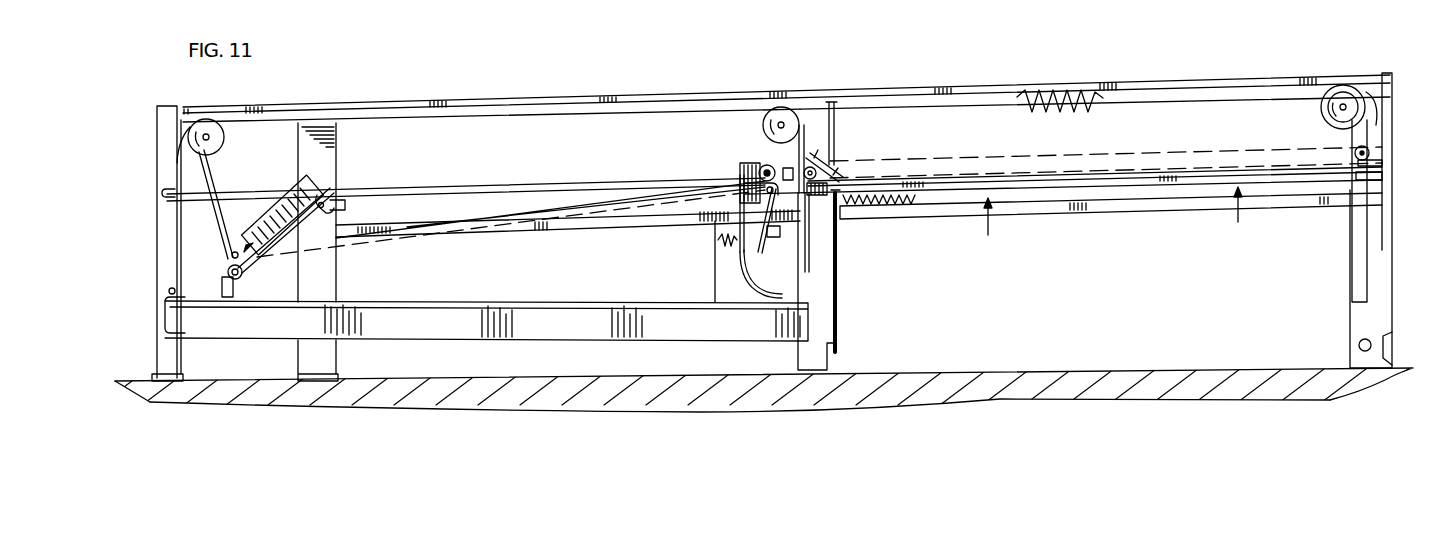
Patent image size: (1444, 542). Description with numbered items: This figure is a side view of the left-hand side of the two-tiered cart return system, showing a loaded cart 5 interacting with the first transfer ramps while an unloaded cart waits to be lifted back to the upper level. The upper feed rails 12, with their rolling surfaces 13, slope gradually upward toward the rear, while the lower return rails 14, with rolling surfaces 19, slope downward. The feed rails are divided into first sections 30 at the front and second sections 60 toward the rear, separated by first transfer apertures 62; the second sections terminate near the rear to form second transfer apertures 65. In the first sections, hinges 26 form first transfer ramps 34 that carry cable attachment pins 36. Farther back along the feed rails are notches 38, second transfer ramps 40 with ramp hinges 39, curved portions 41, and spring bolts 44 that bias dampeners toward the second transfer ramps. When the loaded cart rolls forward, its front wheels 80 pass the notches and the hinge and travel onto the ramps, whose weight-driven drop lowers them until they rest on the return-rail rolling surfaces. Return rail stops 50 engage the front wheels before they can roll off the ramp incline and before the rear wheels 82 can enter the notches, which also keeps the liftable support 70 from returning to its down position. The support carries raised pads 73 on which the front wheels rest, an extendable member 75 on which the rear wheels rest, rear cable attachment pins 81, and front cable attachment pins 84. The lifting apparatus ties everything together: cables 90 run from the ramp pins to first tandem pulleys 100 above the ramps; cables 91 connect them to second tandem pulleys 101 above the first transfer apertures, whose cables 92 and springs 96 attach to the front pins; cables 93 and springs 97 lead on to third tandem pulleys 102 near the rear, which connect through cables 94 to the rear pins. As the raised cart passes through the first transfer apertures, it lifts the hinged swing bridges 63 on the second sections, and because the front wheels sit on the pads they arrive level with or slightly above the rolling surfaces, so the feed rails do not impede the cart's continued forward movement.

The cart 5 is at (742, 170).
The feed rails 12 is at (1113, 170).
The rolling surfaces 13 is at (507, 188).
The return rails 14 is at (420, 310).
The rolling surfaces 19 is at (190, 300).
The hinges 26 is at (335, 200).
The first sections 30 is at (560, 175).
The first transfer ramps 34 is at (273, 213).
The cable attachment pins 36 is at (227, 256).
The notches 38 is at (752, 190).
The ramp hinges 39 is at (778, 240).
The second transfer ramps 40 is at (733, 173).
The curved portions 41 is at (743, 255).
The spring bolts 44 is at (810, 200).
The return rail stops 50 is at (200, 310).
The second sections 60 is at (982, 123).
The first transfer apertures 62 is at (838, 167).
The swing bridges 63 is at (830, 160).
The second transfer apertures 65 is at (1375, 135).
The liftable support 70 is at (1273, 170).
The raised pads 73 is at (817, 160).
The extendable member 75 is at (1383, 163).
The front wheels 80 is at (243, 283).
The cable attachment pins 81 is at (1370, 176).
The rear wheels 82 is at (1370, 153).
The cable attachment pins 84 is at (835, 225).
The cables 90 is at (173, 163).
The cables 91 is at (453, 105).
The cables 92 is at (801, 180).
The cables 93 is at (1170, 95).
The cables 94 is at (1373, 120).
The springs 96 is at (900, 193).
The springs 97 is at (1087, 87).
The first tandem pulleys 100 is at (198, 120).
The second tandem pulleys 101 is at (790, 113).
The third tandem pulleys 102 is at (1337, 85).